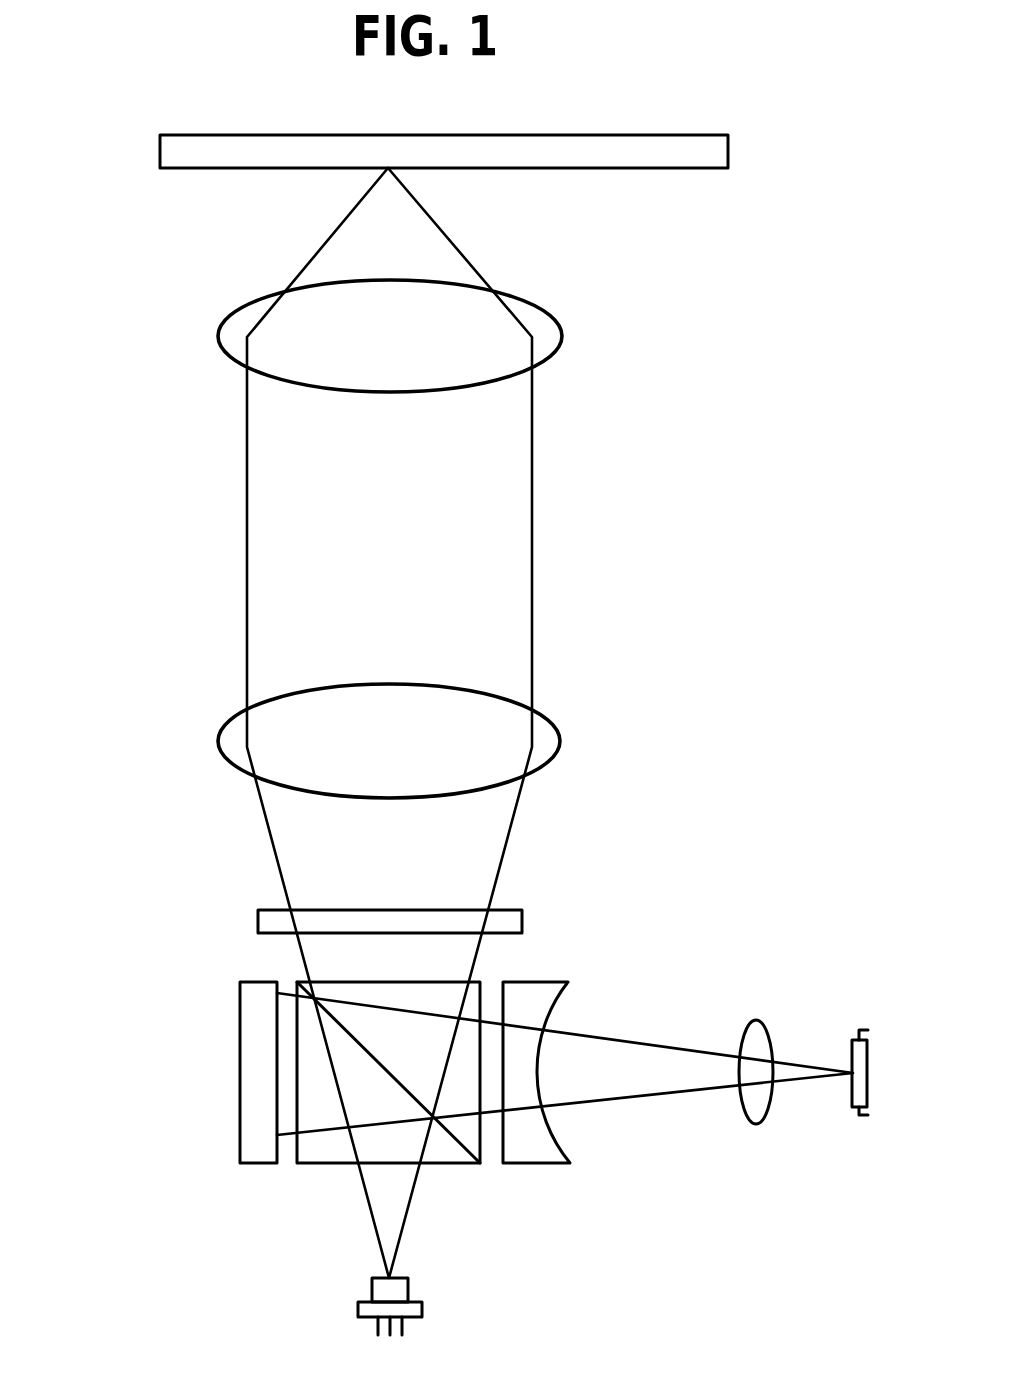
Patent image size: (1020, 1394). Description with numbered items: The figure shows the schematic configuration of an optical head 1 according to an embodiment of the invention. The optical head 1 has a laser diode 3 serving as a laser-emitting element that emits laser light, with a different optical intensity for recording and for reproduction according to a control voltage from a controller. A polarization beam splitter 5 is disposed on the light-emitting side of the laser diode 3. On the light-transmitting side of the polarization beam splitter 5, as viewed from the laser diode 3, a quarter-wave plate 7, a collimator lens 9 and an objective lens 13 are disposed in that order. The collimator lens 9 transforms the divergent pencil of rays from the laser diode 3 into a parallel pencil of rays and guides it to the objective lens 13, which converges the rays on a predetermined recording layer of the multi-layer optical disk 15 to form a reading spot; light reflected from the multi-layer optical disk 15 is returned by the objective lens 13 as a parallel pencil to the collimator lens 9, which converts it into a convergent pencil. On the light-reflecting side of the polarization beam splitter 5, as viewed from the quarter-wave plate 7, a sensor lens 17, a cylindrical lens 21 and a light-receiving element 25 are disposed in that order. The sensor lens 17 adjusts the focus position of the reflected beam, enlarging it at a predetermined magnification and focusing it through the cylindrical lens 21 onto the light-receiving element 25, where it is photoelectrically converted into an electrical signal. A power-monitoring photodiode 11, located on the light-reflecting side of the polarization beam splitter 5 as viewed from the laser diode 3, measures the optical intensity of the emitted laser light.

The optical head 1 is at (124, 430).
The laser diode 3 is at (408, 1288).
The polarization beam splitter 5 is at (440, 992).
The quarter-wave plate 7 is at (258, 918).
The collimator lens 9 is at (438, 717).
The power-monitoring photodiode 11 is at (240, 1050).
The objective lens 13 is at (438, 373).
The multi-layer optical disk 15 is at (652, 135).
The sensor lens 17 is at (525, 992).
The cylindrical lens 21 is at (756, 1020).
The light-receiving element 25 is at (852, 1110).